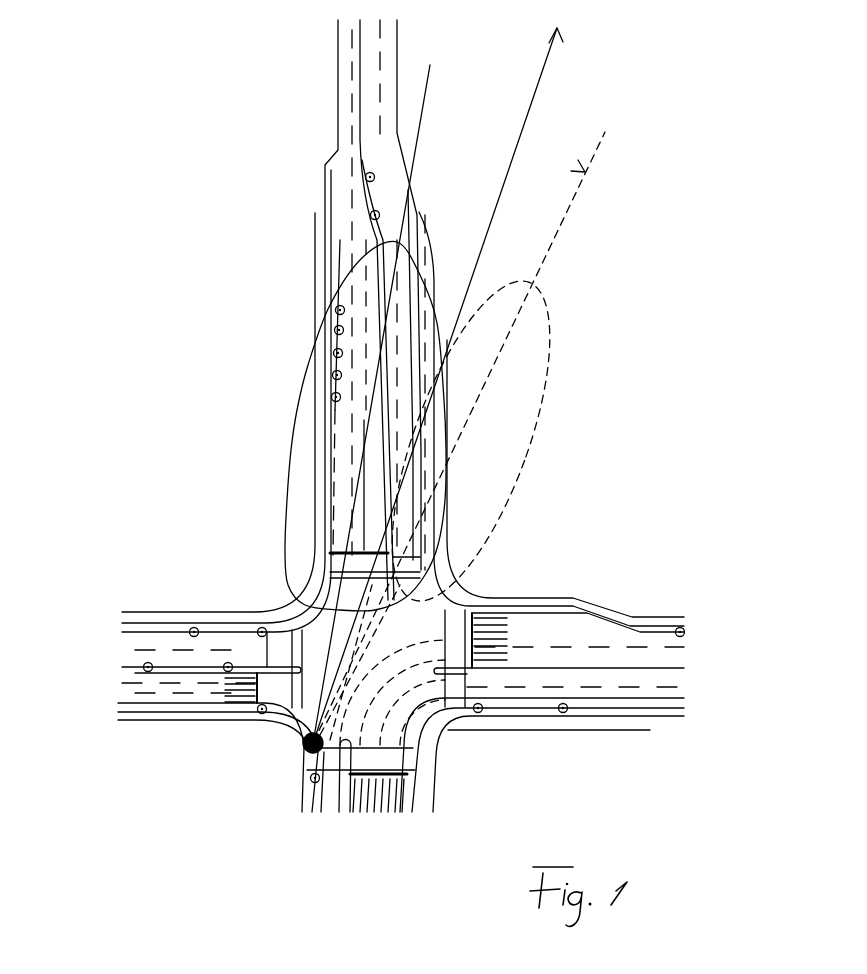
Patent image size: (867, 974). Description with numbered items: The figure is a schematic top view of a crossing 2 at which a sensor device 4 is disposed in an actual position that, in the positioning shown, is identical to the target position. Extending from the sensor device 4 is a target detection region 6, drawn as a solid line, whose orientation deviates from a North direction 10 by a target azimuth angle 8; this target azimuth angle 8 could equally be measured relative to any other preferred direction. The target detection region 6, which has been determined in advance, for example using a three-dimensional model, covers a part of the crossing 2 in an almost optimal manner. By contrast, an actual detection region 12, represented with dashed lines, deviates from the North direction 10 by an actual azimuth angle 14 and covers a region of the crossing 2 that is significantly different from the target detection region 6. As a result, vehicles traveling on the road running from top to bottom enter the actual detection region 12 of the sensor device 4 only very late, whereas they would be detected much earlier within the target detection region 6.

The crossing 2 is at (552, 587).
The sensor device 4 is at (305, 750).
The target detection region 6 is at (300, 420).
The target azimuth angle 8 is at (585, 172).
The North direction 10 is at (547, 68).
The actual detection region 12 is at (545, 370).
The actual azimuth angle 14 is at (550, 147).